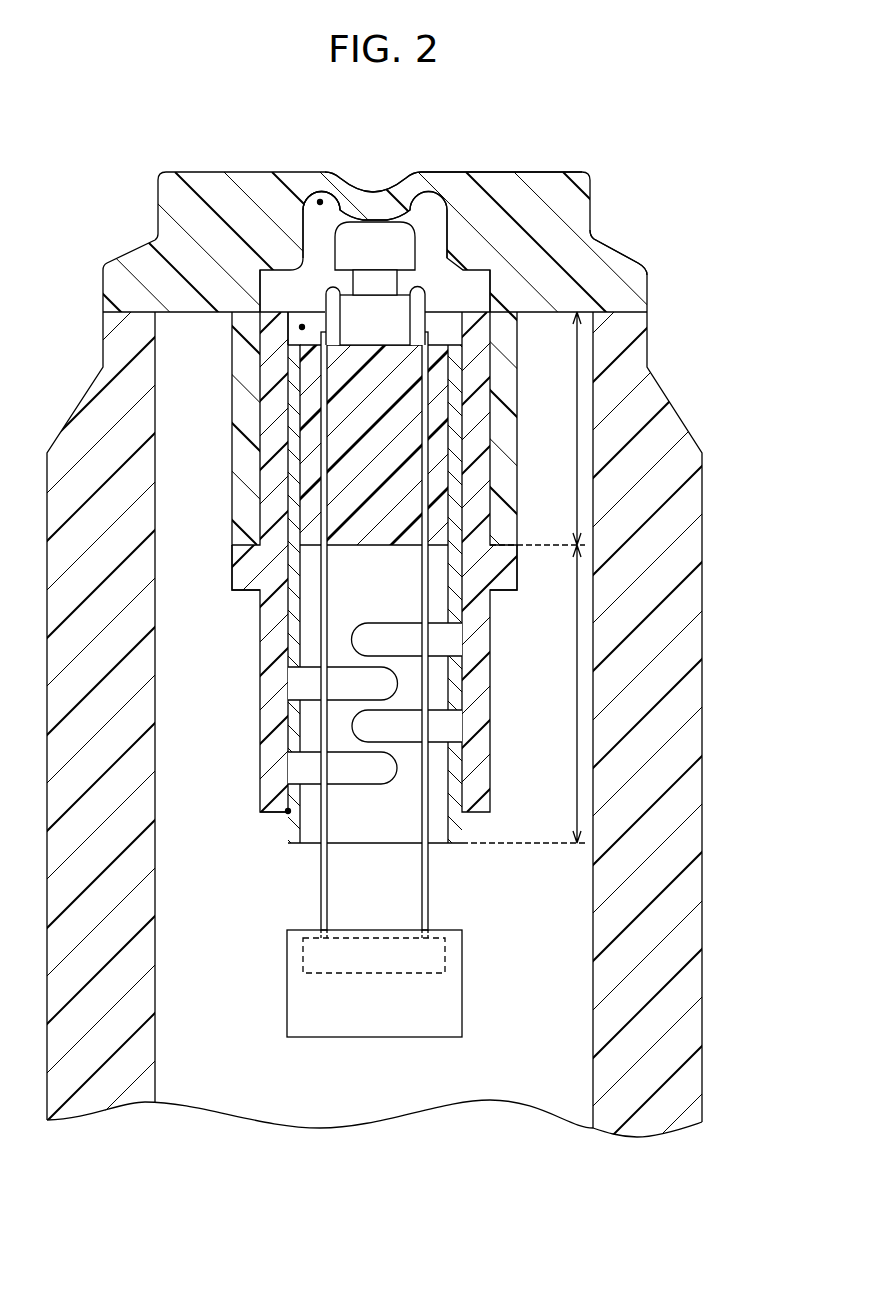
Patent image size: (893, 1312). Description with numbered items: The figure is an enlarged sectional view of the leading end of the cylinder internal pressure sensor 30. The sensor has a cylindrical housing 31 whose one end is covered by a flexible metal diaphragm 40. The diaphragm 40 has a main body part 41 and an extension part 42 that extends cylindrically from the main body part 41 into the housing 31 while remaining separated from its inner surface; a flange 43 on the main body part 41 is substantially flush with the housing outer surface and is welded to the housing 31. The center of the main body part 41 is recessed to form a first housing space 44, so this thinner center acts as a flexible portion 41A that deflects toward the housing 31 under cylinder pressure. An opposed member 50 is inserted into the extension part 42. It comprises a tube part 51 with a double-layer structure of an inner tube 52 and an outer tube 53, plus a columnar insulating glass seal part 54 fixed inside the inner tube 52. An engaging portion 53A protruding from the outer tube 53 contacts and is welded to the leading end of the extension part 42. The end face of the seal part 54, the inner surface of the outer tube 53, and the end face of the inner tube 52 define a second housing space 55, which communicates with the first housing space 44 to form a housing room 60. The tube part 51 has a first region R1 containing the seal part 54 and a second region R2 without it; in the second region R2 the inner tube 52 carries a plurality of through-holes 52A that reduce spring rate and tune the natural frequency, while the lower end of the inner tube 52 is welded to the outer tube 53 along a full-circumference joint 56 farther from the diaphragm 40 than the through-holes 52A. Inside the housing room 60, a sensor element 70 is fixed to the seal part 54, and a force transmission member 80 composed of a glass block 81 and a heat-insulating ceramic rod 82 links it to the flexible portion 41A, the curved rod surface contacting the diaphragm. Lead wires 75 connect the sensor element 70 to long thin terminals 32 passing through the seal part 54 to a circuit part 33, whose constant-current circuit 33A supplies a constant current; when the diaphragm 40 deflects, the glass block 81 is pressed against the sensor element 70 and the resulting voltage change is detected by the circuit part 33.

The cylinder internal pressure sensor 30 is at (693, 175).
The housing 31 is at (648, 390).
The terminals 32 is at (320, 884).
The circuit part 33 is at (465, 1000).
The constant-current circuit 33A is at (448, 956).
The diaphragm 40 is at (210, 178).
The main body part 41 is at (498, 176).
The flexible portion 41A is at (375, 191).
The extension part 42 is at (510, 386).
The flange 43 is at (640, 287).
The first housing space 44 is at (312, 196).
The opposed member 50 is at (446, 577).
The tube part 51 is at (446, 577).
The inner tube 52 is at (446, 594).
The through-holes 52A is at (385, 678).
The outer tube 53 is at (446, 562).
The engaging portion 53A is at (232, 560).
The seal part 54 is at (344, 545).
The second housing space 55 is at (300, 327).
The joint 56 is at (288, 811).
The housing room 60 is at (298, 309).
The sensor element 70 is at (428, 322).
The lead wires 75 is at (330, 290).
The force transmission member 80 is at (426, 244).
The glass block 81 is at (420, 283).
The rod 82 is at (417, 240).
The first region R1 is at (537, 428).
The second region R2 is at (523, 694).